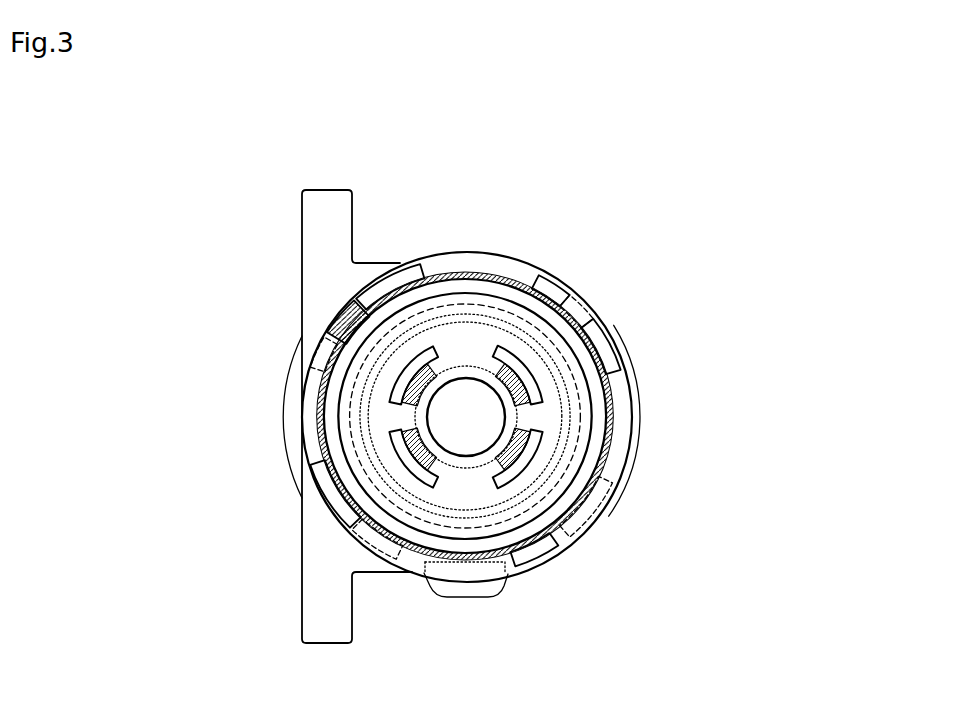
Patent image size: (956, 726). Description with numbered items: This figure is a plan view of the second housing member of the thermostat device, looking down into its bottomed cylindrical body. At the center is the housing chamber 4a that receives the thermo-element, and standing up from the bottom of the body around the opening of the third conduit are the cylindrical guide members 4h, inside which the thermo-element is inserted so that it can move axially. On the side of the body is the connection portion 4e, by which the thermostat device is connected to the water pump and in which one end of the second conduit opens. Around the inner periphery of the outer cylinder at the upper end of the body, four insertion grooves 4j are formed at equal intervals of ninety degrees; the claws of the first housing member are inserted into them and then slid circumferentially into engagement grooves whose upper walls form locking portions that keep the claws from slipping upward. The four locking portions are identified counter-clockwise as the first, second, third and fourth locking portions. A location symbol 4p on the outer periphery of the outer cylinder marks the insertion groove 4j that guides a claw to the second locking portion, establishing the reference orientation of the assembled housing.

The housing chamber 4a is at (474, 332).
The connection portion 4e is at (302, 250).
The guide members 4h is at (545, 414).
The insertion grooves 4j is at (383, 265).
The location symbol 4p is at (616, 325).